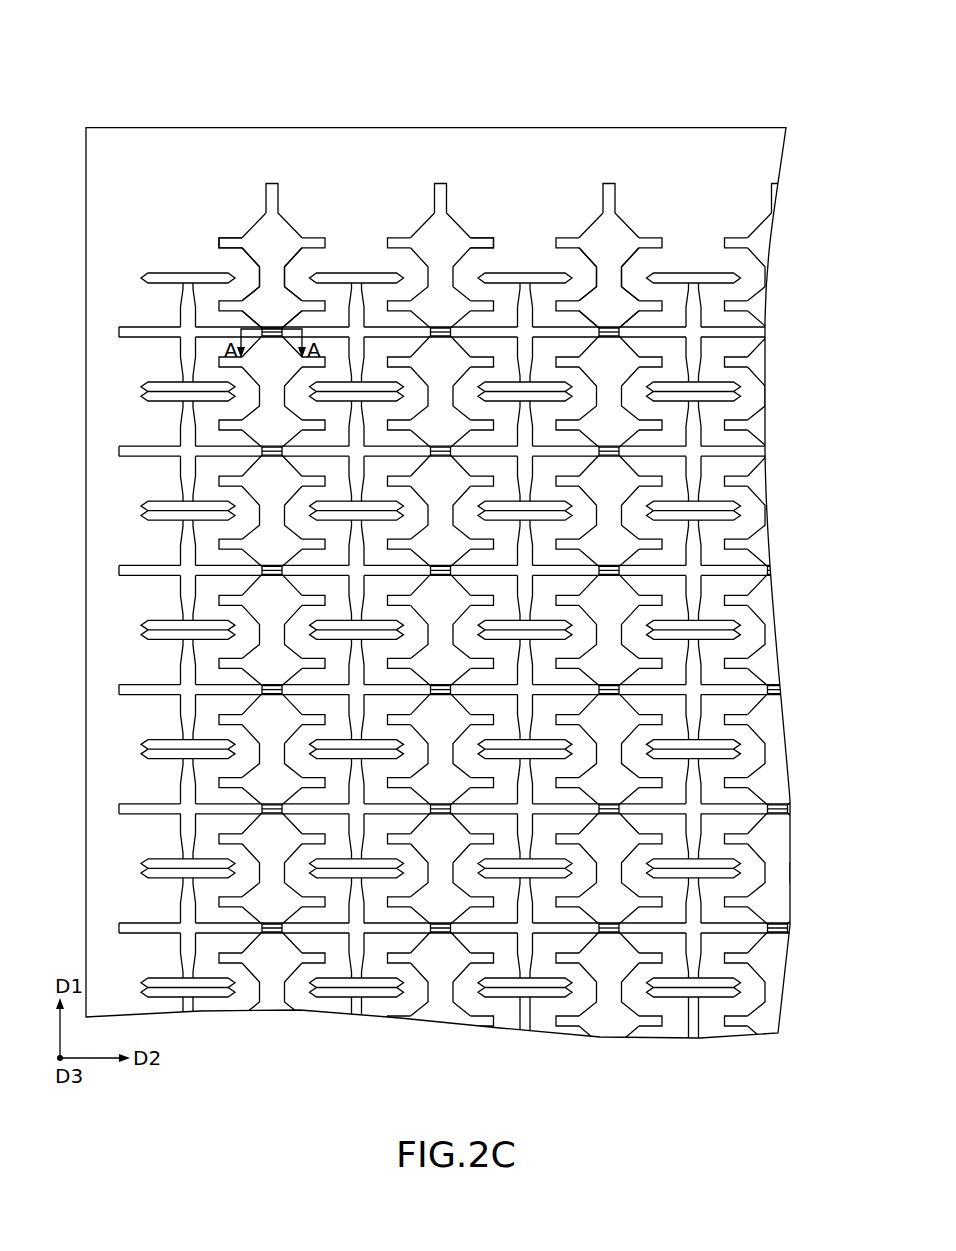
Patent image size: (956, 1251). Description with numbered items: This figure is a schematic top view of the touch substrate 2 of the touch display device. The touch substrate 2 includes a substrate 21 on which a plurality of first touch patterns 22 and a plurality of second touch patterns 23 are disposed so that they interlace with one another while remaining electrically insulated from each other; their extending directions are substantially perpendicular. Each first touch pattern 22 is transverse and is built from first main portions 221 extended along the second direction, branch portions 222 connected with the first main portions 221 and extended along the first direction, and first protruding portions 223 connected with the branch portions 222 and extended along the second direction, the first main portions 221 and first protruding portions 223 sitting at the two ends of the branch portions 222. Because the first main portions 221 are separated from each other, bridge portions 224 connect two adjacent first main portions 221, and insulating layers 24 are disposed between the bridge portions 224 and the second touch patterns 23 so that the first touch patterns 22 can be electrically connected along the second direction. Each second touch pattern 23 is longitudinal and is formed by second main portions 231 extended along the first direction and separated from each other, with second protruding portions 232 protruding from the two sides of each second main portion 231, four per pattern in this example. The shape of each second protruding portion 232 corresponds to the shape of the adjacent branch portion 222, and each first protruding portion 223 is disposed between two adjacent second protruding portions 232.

The touch substrate 2 is at (160, 40).
The substrate 21 is at (674, 155).
The first touch pattern 22 is at (438, 615).
The first main portion 221 is at (120, 334).
The branch portion 222 is at (187, 305).
The first protruding portion 223 is at (155, 276).
The second touch pattern 23 is at (504, 605).
The second main portion 231 is at (279, 234).
The second protruding portion 232 is at (484, 190).
The insulating layer 24 is at (543, 640).
The bridge portion 224 is at (790, 929).